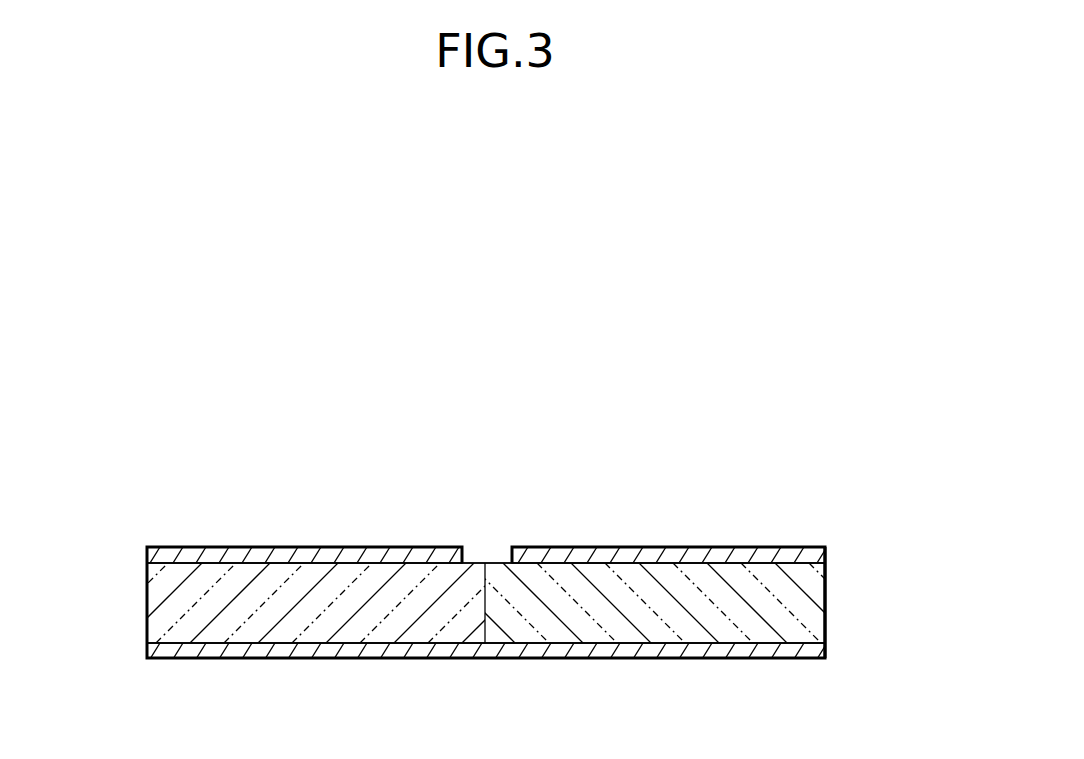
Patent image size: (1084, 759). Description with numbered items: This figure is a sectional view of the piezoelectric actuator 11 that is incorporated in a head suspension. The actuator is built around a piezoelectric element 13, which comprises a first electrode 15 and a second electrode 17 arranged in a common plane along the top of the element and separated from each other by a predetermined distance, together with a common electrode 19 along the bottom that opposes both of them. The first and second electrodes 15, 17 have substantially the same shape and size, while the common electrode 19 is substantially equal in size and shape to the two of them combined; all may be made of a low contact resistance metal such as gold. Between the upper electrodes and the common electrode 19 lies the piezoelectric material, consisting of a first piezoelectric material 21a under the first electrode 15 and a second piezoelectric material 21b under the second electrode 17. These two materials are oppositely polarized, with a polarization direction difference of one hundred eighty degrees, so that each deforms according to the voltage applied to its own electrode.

The piezoelectric actuator 11 is at (737, 383).
The piezoelectric element 13 is at (600, 515).
The first electrode 15 is at (393, 556).
The second electrode 17 is at (747, 549).
The common electrode 19 is at (533, 650).
The first piezoelectric material 21a is at (158, 600).
The second piezoelectric material 21b is at (815, 593).